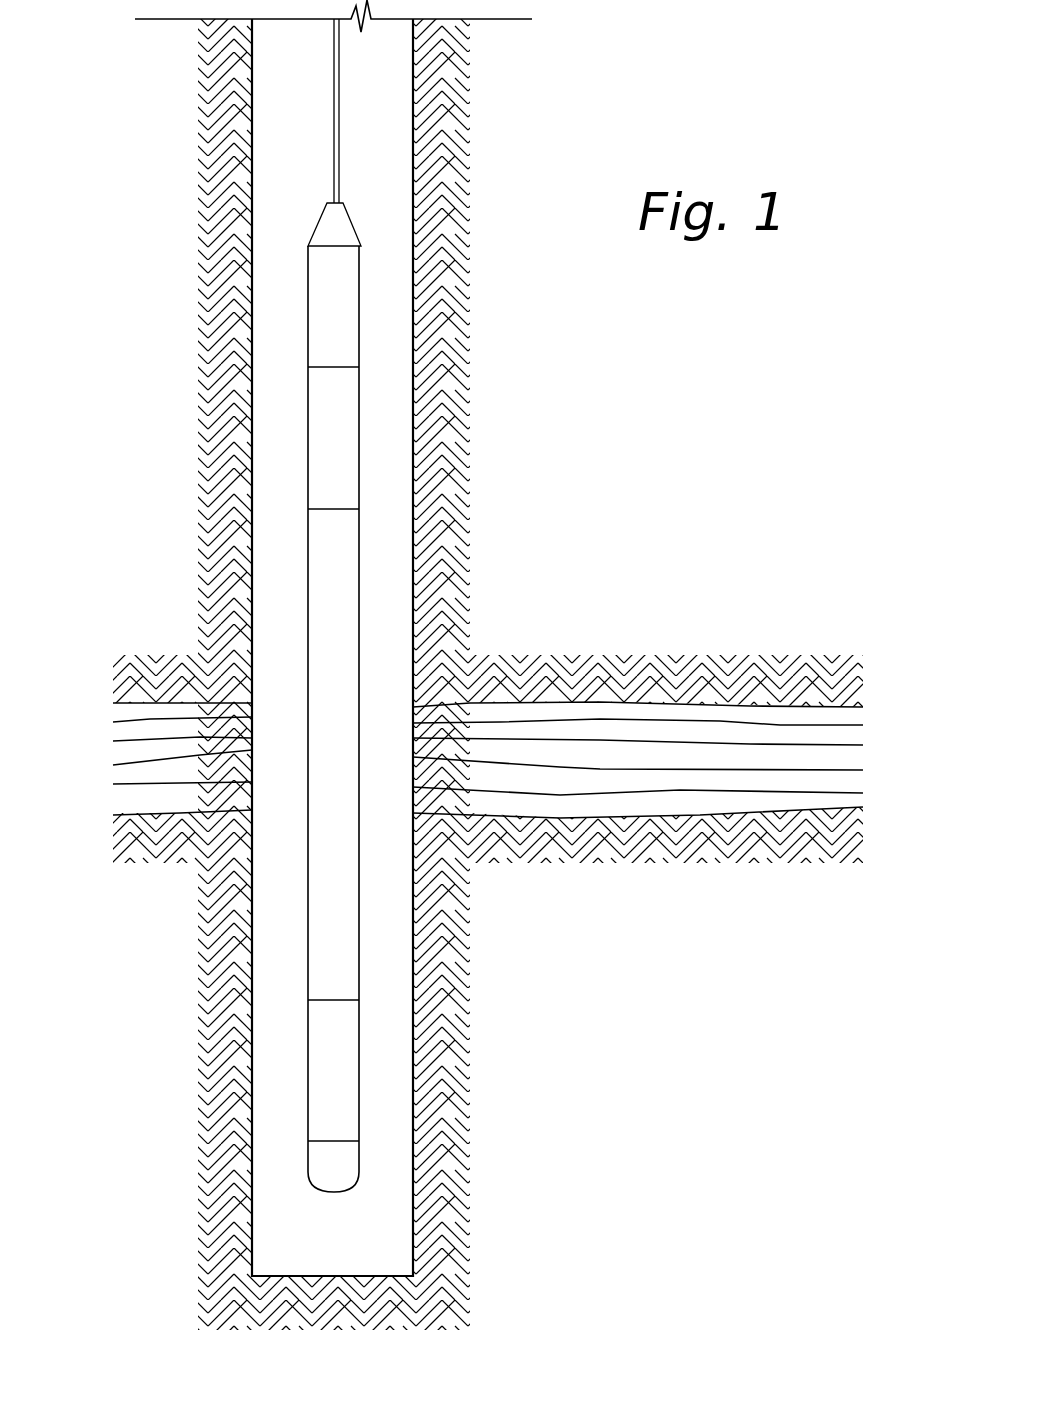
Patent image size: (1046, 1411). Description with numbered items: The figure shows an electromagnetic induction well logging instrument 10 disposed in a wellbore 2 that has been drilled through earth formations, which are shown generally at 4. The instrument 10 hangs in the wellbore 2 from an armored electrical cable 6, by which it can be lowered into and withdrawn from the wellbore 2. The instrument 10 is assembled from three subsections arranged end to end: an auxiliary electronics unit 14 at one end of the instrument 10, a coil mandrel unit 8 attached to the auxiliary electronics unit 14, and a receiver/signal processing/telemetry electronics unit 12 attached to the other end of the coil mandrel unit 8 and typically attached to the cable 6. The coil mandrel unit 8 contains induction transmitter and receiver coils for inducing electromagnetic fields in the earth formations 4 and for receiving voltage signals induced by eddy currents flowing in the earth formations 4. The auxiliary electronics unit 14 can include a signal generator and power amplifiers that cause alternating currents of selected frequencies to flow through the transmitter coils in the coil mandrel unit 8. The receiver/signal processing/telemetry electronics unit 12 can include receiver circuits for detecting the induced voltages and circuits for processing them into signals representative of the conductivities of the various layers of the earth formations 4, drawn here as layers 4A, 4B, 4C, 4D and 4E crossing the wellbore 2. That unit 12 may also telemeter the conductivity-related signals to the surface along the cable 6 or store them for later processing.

The wellbore 2 is at (373, 103).
The earth formations 4 is at (481, 761).
The layer of the earth formations 4A is at (858, 719).
The layer of the earth formations 4B is at (858, 741).
The layer of the earth formations 4C is at (858, 763).
The layer of the earth formations 4D is at (858, 786).
The layer of the earth formations 4E is at (858, 808).
The armored electrical cable 6 is at (333, 141).
The coil mandrel unit 8 is at (325, 762).
The electromagnetic induction well logging instrument 10 is at (394, 697).
The receiver/signal processing/telemetry electronics unit 12 is at (325, 414).
The auxiliary electronics unit 14 is at (322, 1080).